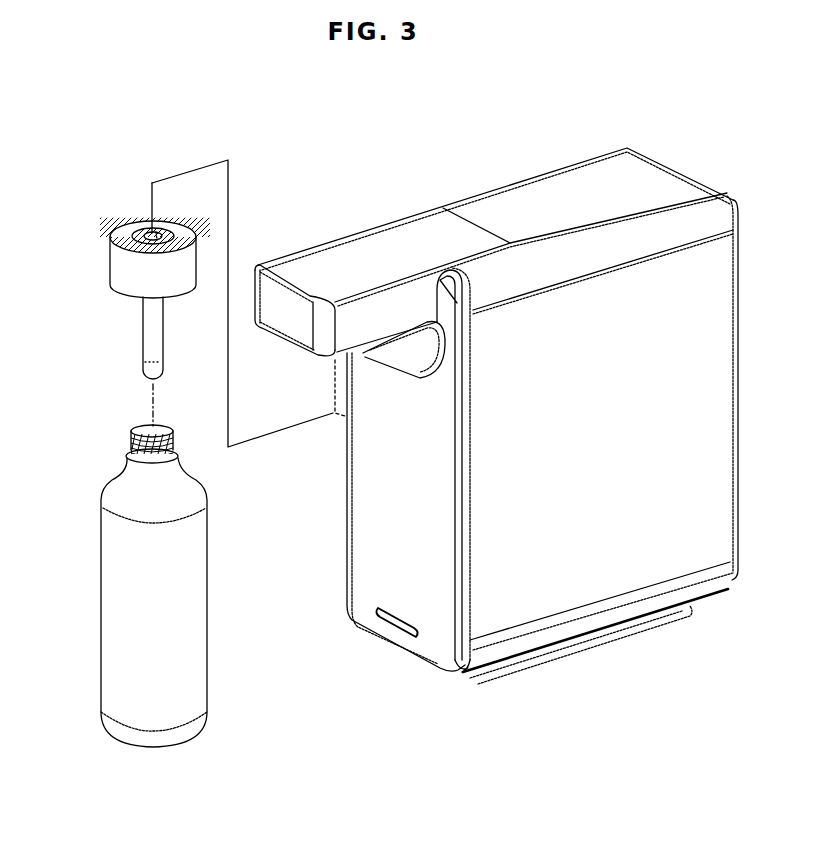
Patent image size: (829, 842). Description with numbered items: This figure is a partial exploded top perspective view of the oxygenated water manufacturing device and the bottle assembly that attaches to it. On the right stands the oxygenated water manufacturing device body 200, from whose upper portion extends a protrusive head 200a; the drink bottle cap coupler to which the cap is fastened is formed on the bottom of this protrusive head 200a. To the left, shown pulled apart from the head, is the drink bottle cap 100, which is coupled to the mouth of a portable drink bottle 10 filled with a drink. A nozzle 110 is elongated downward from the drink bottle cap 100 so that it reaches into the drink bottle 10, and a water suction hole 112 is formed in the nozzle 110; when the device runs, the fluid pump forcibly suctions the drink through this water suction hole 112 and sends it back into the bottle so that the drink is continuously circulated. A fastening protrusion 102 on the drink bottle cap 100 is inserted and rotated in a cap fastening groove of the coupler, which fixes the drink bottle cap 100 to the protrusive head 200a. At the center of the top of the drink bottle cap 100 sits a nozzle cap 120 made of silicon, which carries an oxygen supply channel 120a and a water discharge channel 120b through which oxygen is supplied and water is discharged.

The drink bottle 10 is at (114, 547).
The drink bottle cap 100 is at (118, 272).
The fastening protrusion 102 is at (200, 214).
The nozzle 110 is at (144, 324).
The water suction hole 112 is at (150, 358).
The nozzle cap 120 is at (140, 232).
The oxygen supply channel 120a is at (149, 232).
The water discharge channel 120b is at (163, 228).
The oxygenated water manufacturing device body 200 is at (530, 172).
The protrusive head 200a is at (282, 305).